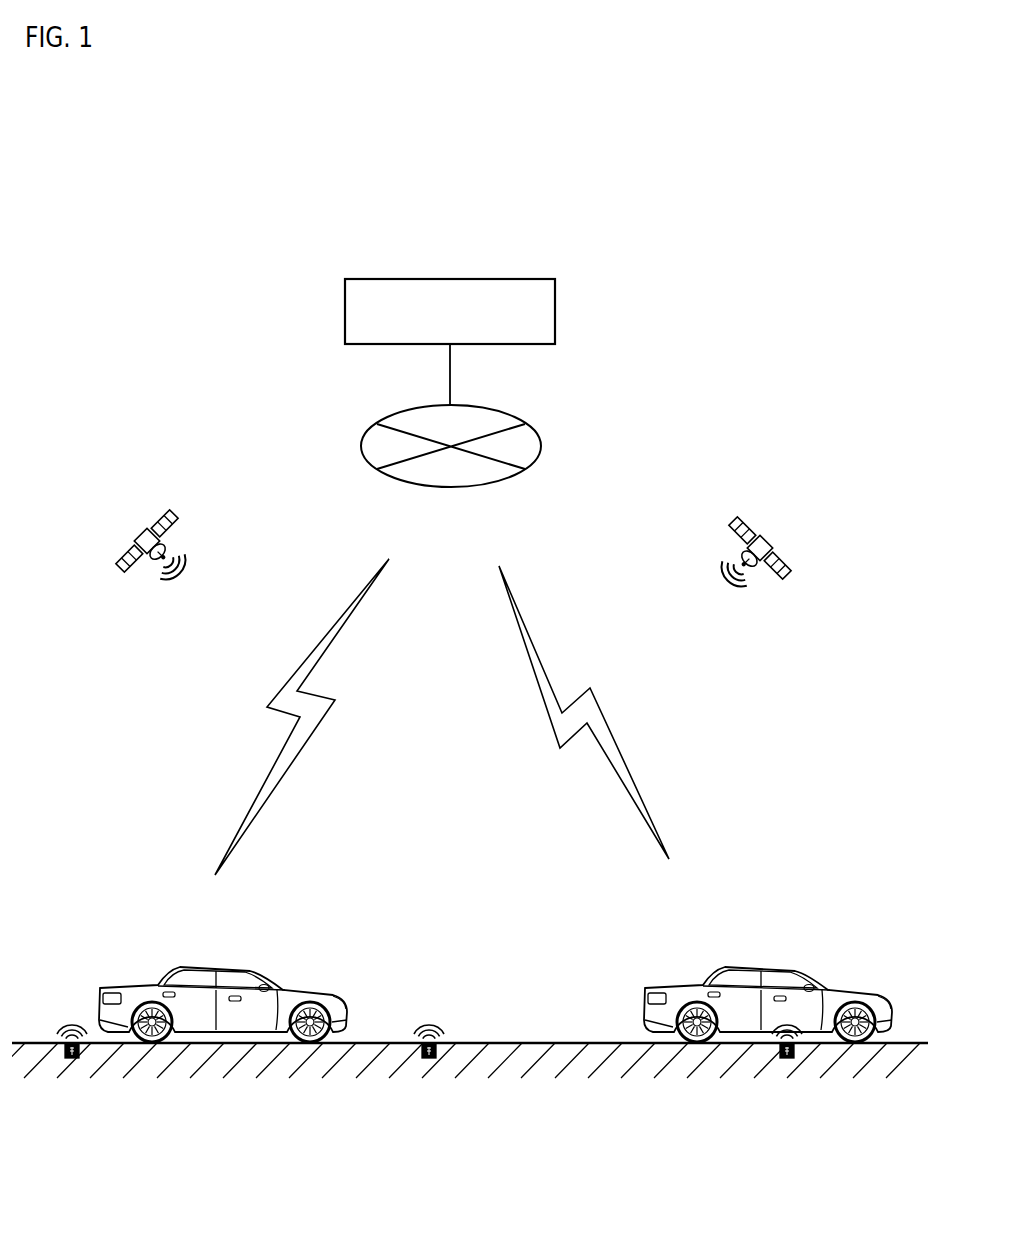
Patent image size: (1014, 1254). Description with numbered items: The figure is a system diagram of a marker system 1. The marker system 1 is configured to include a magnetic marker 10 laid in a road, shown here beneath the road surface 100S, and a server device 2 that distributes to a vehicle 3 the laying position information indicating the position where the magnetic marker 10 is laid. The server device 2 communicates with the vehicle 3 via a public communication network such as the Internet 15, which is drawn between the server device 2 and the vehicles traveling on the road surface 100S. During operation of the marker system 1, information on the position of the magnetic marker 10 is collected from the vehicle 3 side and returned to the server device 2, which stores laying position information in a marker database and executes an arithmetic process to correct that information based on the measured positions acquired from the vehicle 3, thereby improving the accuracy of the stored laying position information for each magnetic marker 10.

The marker system 1 is at (757, 255).
The server device 2 is at (515, 283).
The Internet 15 is at (530, 428).
The vehicle 3 is at (778, 982).
The magnetic marker 10 is at (427, 1059).
The road surface 100S is at (545, 1042).